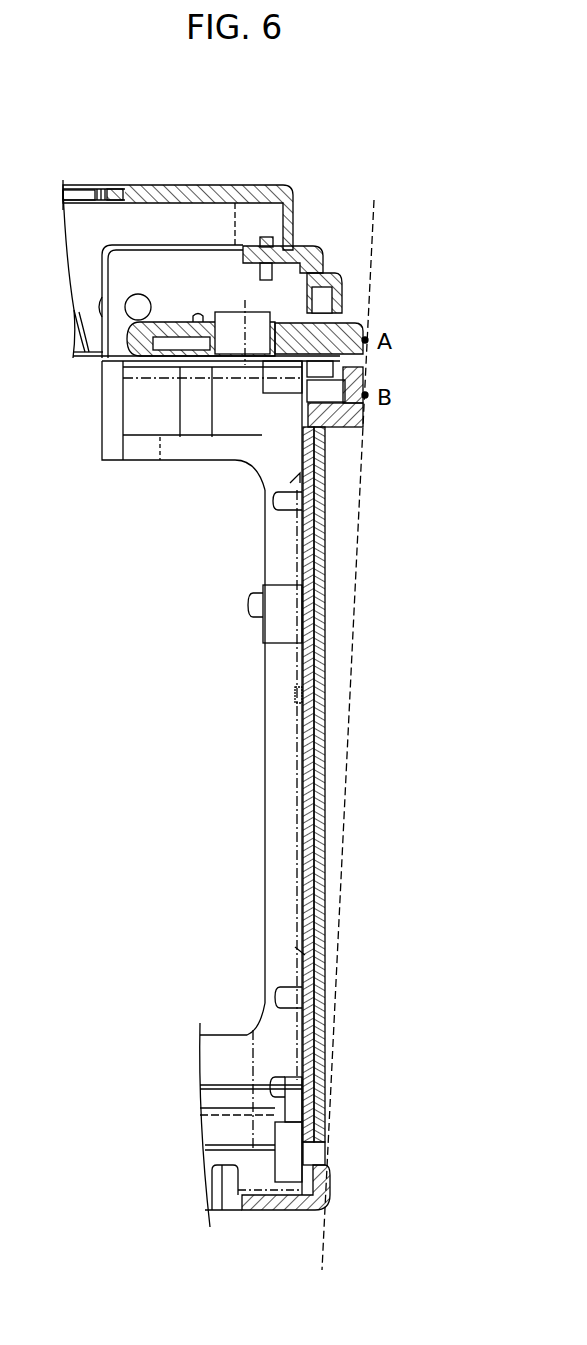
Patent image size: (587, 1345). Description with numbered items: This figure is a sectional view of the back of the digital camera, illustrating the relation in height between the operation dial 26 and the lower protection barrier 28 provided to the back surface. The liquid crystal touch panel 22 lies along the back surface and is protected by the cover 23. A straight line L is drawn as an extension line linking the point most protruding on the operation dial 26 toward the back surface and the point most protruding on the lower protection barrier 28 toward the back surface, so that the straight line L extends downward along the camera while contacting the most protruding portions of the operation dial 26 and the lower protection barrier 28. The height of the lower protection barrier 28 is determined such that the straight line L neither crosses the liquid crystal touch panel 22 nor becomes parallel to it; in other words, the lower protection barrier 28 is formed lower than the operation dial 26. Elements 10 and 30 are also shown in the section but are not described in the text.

The seal member 10 is at (318, 246).
The liquid crystal touch panel 22 is at (322, 640).
The cover 23 is at (320, 768).
The operation dial 26 is at (368, 356).
The lower protection barrier 28 is at (362, 418).
The upper fixing block 30 is at (345, 290).
The straight line L is at (372, 254).